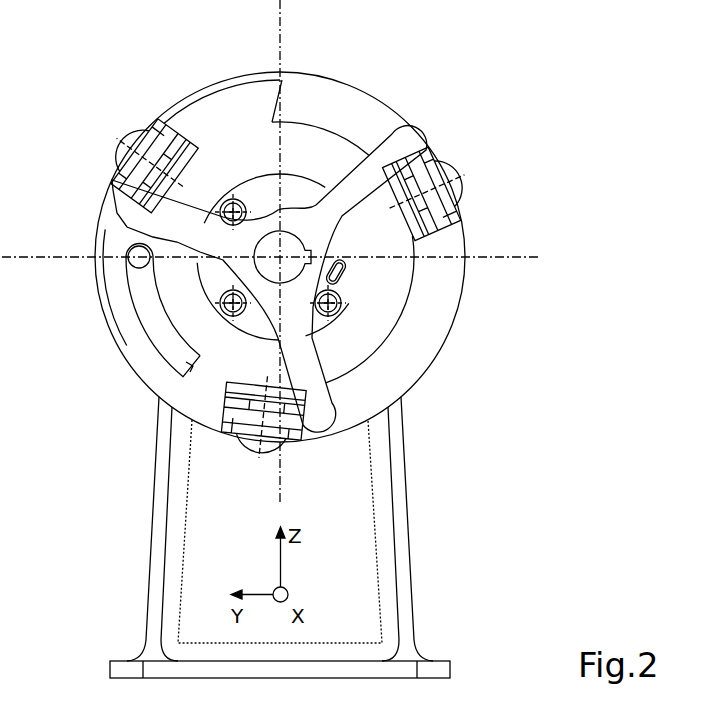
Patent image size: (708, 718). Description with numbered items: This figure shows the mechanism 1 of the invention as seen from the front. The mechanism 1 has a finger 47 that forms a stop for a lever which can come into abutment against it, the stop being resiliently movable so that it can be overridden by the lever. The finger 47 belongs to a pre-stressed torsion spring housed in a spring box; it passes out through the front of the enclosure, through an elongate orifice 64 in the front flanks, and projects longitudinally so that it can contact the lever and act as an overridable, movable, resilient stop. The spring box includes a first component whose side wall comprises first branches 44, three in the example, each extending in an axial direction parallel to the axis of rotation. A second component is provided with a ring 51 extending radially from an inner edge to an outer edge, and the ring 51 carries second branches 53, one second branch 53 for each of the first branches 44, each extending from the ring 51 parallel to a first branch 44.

The mechanism 1 is at (566, 147).
The first branches 44 is at (450, 207).
The finger 47 is at (134, 247).
The ring 51 is at (335, 97).
The second branch 53 is at (447, 242).
The elongate orifice 64 is at (150, 318).